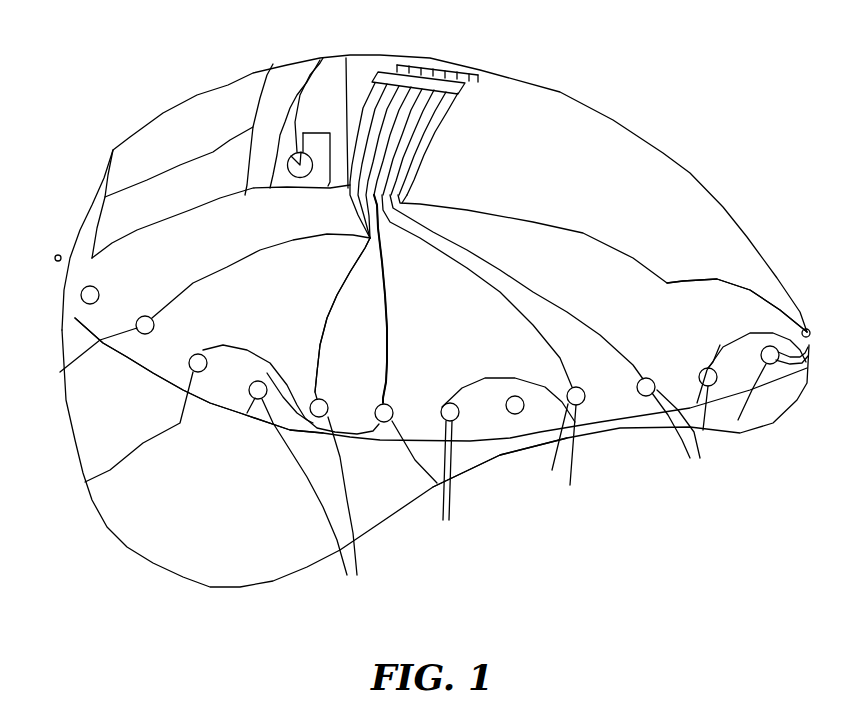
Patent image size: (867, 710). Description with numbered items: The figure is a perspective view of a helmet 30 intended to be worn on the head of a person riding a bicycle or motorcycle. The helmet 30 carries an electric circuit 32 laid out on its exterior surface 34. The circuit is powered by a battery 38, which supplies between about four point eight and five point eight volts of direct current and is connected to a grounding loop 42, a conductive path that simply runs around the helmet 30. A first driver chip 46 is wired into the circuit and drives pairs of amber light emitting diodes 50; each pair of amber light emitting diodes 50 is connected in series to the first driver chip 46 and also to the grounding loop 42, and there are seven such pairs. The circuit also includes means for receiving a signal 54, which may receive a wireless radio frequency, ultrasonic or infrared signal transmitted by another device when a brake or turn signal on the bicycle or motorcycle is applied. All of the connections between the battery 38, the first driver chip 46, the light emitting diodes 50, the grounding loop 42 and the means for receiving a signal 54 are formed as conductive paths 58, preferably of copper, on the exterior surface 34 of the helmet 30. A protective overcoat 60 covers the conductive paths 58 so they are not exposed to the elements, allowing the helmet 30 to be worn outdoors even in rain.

The helmet 30 is at (760, 463).
The electric circuit 32 is at (170, 355).
The exterior surface 34 is at (712, 230).
The battery 38 is at (197, 122).
The grounding loop 42 is at (490, 443).
The first driver chip 46 is at (458, 86).
The amber light emitting diodes 50 is at (58, 262).
The means for receiving a signal 54 is at (288, 167).
The conductive paths 58 is at (77, 230).
The protective overcoat 60 is at (83, 213).